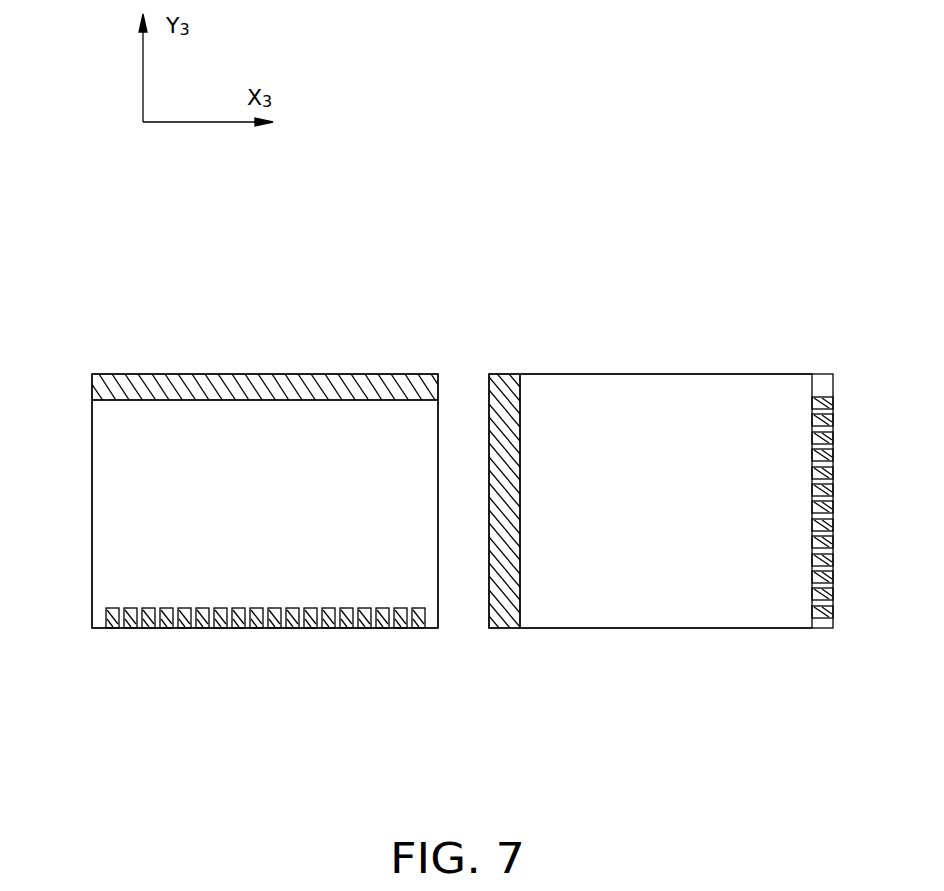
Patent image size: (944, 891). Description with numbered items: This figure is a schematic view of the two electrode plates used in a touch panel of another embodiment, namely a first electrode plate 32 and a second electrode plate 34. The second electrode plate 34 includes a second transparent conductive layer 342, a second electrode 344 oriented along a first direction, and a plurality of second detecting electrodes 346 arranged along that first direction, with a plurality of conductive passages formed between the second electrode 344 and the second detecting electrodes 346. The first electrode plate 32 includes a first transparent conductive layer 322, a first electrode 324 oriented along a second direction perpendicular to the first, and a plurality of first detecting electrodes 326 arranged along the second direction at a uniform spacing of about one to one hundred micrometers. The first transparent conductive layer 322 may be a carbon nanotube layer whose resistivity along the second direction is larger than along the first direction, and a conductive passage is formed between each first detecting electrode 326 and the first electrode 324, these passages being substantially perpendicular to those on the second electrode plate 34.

The first electrode plate 32 is at (646, 289).
The first transparent conductive layer 322 is at (658, 397).
The first electrode 324 is at (505, 390).
The first detecting electrodes 326 is at (814, 397).
The second electrode plate 34 is at (292, 328).
The second transparent conductive layer 342 is at (112, 473).
The second electrode 344 is at (332, 378).
The second detecting electrodes 346 is at (109, 613).